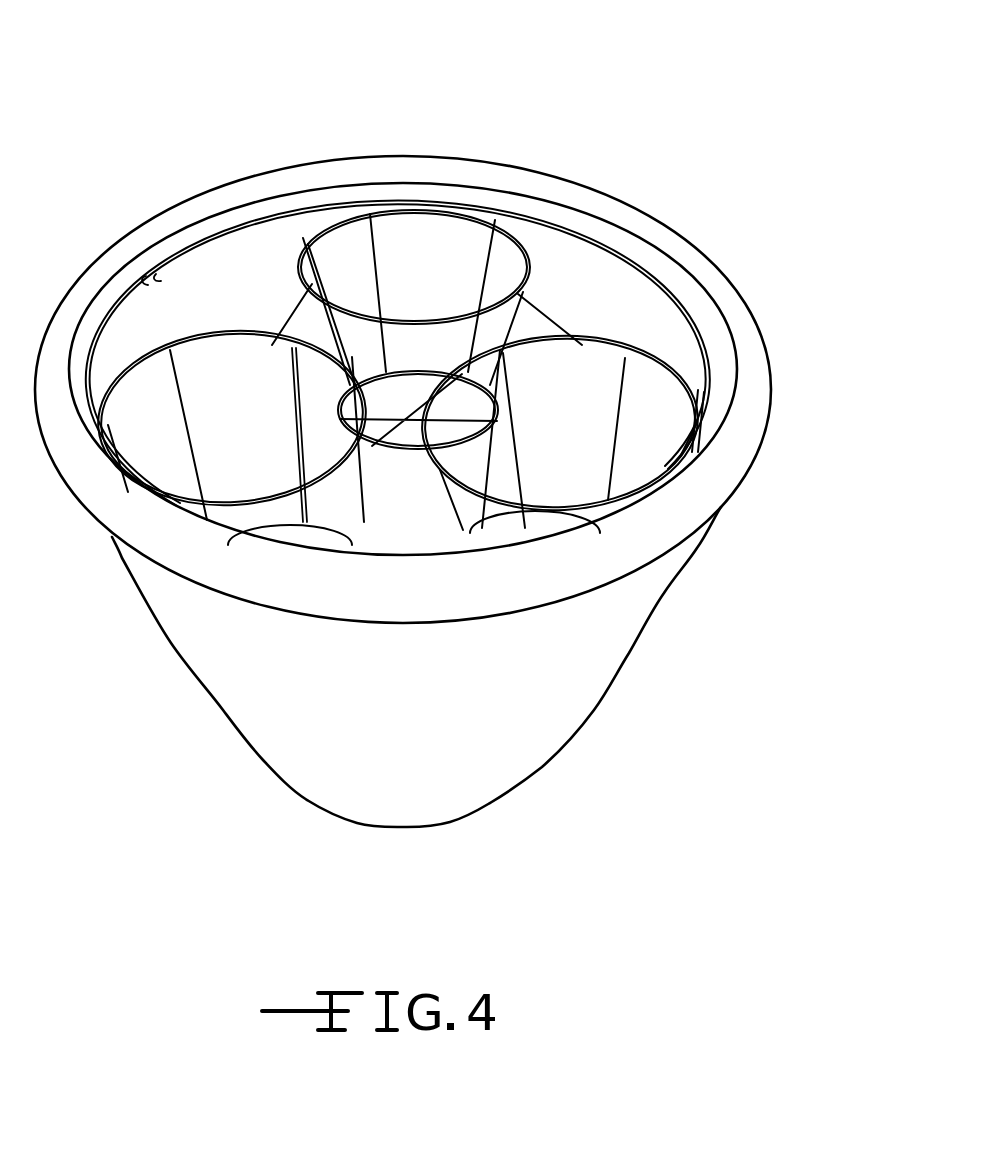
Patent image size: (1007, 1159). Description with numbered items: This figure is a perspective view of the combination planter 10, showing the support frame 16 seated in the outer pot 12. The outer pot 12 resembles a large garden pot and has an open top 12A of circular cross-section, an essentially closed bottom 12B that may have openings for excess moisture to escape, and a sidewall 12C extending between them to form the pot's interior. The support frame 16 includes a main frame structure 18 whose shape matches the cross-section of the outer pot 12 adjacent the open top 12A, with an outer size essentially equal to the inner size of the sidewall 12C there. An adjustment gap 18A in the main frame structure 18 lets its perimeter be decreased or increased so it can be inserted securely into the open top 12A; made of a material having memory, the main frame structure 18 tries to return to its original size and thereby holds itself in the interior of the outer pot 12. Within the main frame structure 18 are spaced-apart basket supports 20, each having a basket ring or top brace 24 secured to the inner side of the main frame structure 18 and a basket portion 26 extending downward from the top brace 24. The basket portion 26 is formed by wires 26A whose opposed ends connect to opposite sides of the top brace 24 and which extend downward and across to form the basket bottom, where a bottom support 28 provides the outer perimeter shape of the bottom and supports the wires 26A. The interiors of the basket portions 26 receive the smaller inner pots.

The combination planter 10 is at (540, 95).
The outer pot 12 is at (538, 728).
The open top 12A is at (773, 357).
The bottom 12B is at (452, 823).
The sidewall 12C is at (262, 708).
The support frame 16 is at (692, 313).
The main frame structure 18 is at (610, 246).
The adjustment gap 18A is at (145, 272).
The basket support 20 is at (637, 475).
The top brace 24 is at (692, 398).
The basket portion 26 is at (182, 505).
The wires 26A is at (292, 408).
The bottom support 28 is at (493, 440).